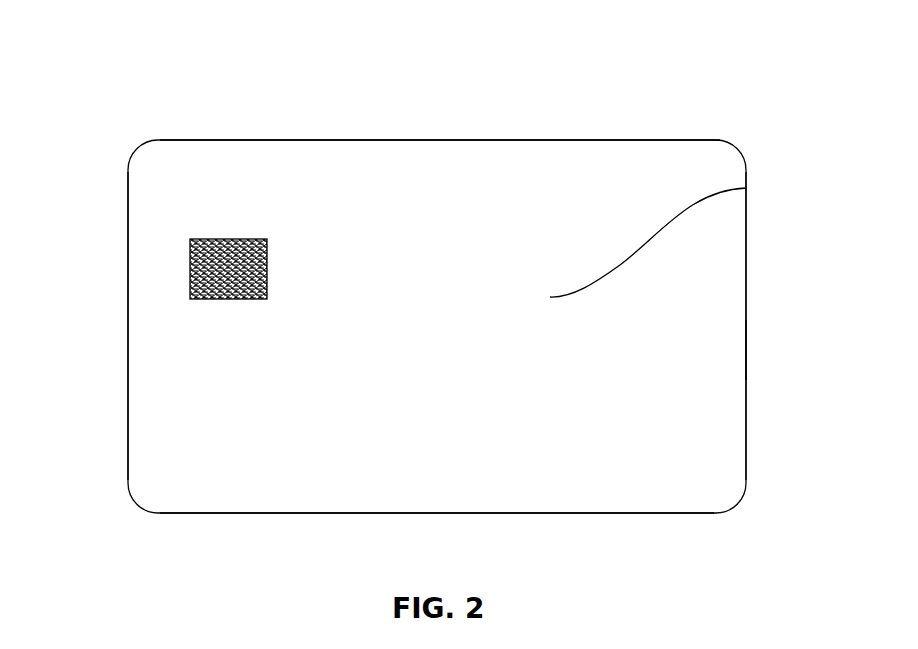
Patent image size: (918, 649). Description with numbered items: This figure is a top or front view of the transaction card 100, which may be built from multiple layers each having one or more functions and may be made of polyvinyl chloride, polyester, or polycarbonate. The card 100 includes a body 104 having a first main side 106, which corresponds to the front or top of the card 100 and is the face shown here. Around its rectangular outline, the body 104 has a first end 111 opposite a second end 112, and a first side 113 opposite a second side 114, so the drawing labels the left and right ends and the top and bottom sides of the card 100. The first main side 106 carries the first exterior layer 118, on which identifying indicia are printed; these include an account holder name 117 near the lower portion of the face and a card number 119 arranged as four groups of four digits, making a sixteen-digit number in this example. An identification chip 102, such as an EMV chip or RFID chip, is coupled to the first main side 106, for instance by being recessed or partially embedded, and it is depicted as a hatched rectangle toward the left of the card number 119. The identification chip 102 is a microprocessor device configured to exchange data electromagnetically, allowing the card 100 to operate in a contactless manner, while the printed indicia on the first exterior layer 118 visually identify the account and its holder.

The card 100 is at (140, 48).
The identification chip 102 is at (190, 270).
The body 104 is at (604, 160).
The first main side 106 is at (704, 327).
The first end 111 is at (128, 408).
The second end 112 is at (746, 290).
The first side 113 is at (236, 140).
The second side 114 is at (626, 513).
The account holder name 117 is at (182, 484).
The first exterior layer 118 is at (746, 188).
The card number 119 is at (210, 372).